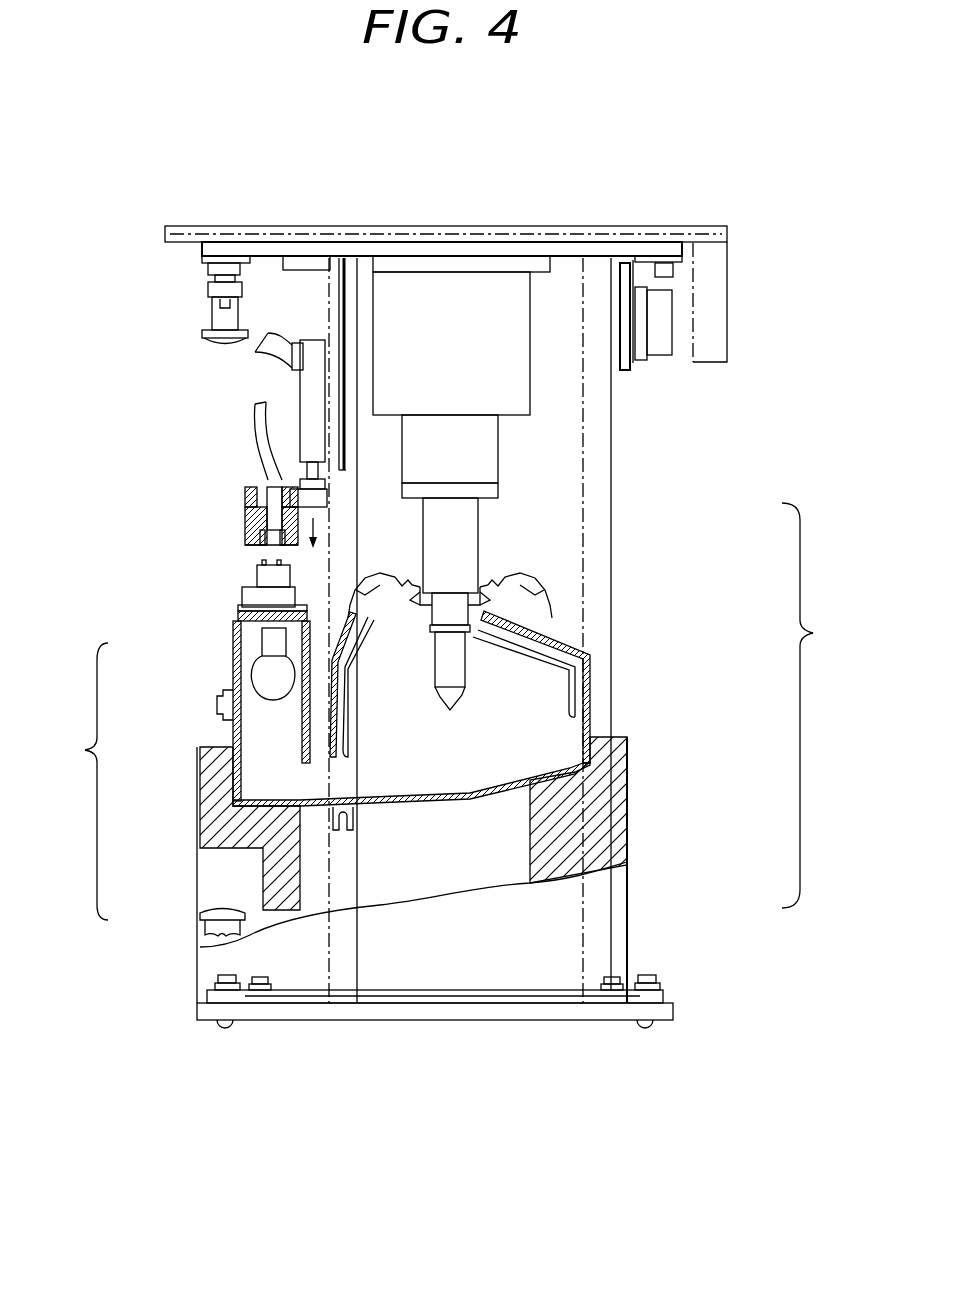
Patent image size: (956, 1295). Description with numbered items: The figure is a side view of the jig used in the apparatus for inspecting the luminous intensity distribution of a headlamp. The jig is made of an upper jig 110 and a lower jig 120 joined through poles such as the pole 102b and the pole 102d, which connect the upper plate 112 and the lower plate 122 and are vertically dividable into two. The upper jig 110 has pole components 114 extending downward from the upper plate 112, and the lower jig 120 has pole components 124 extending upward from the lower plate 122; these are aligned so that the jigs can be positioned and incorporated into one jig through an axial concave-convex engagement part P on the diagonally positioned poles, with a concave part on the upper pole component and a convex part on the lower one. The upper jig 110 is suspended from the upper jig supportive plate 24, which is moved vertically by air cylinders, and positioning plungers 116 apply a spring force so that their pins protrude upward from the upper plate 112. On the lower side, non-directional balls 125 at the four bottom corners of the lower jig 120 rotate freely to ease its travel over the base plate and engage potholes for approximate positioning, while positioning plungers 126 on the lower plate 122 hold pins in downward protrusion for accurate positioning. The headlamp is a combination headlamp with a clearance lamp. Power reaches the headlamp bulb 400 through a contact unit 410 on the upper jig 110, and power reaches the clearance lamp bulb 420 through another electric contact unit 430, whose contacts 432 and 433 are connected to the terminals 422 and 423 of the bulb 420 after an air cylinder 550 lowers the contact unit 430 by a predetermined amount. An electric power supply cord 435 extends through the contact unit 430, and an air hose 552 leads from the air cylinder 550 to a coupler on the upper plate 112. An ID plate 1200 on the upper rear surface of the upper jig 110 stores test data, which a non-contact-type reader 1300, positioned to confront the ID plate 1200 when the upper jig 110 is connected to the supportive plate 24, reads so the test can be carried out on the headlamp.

The upper jig supportive plate 24 is at (200, 224).
The upper plate 112 is at (278, 242).
The positioning plungers 116 is at (212, 313).
The air hose 552 is at (268, 356).
The air cylinder 550 is at (300, 395).
The electric power supply cord 435 is at (257, 416).
The electric contact unit 430 is at (219, 509).
The contact 432 is at (248, 504).
The contact 433 is at (275, 549).
The terminal 422 is at (256, 564).
The pole components 114 is at (620, 530).
The bulb 420 is at (262, 702).
The terminal 423 is at (343, 572).
The contact unit 410 is at (483, 547).
The headlamp bulb 400 is at (466, 670).
The upper jig 110 is at (628, 471).
The ID plate 1200 is at (660, 362).
The non-contact-type reader 1300 is at (728, 270).
The pole 102d is at (827, 705).
The pole 102b is at (69, 781).
The concave-convex engagement part P is at (313, 825).
The pole components 124 is at (313, 895).
The positioning plungers 126 is at (200, 914).
The lower jig 120 is at (631, 961).
The lower plate 122 is at (432, 1022).
The non-directional balls 125 is at (225, 1028).